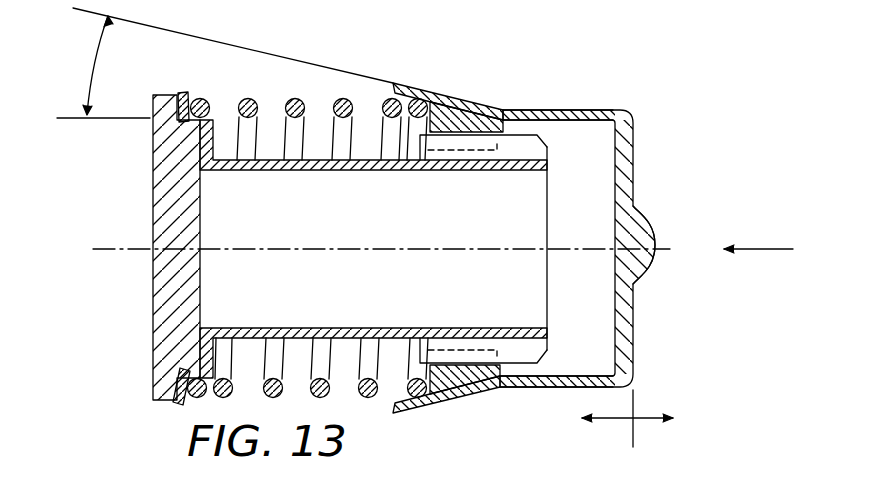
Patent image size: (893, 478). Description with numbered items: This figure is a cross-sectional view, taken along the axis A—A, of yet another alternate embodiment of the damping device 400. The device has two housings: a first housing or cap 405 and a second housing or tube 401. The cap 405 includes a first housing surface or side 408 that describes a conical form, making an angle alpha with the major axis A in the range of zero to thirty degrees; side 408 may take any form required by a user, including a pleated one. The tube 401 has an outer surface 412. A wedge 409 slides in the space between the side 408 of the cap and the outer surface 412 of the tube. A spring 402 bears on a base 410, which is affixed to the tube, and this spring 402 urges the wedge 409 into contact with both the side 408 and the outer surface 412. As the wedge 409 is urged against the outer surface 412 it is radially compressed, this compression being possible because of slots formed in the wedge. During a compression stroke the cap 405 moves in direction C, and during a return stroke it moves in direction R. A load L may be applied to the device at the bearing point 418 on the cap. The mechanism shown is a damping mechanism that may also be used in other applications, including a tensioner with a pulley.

The tensioner assembly 400 is at (428, 227).
The second housing or tube 401 is at (297, 171).
The spring 402 is at (248, 97).
The first housing or cap 405 is at (615, 231).
The first housing surface or side 408 is at (458, 104).
The wedge 409 is at (477, 105).
The base 410 is at (160, 203).
The outer surface 412 is at (525, 150).
The bearing point 418 is at (658, 237).